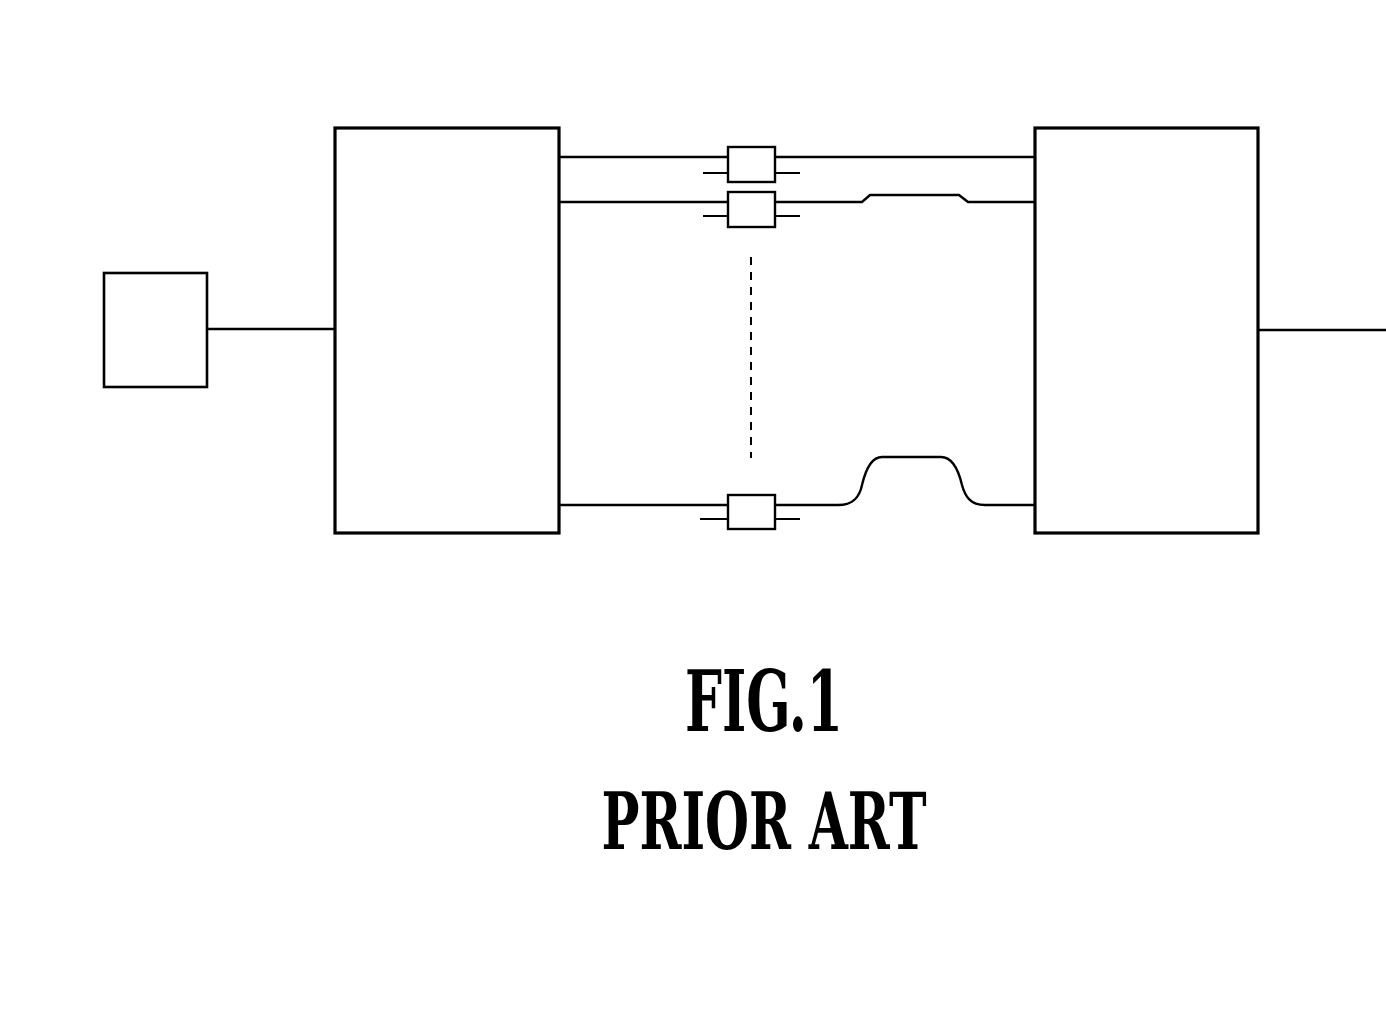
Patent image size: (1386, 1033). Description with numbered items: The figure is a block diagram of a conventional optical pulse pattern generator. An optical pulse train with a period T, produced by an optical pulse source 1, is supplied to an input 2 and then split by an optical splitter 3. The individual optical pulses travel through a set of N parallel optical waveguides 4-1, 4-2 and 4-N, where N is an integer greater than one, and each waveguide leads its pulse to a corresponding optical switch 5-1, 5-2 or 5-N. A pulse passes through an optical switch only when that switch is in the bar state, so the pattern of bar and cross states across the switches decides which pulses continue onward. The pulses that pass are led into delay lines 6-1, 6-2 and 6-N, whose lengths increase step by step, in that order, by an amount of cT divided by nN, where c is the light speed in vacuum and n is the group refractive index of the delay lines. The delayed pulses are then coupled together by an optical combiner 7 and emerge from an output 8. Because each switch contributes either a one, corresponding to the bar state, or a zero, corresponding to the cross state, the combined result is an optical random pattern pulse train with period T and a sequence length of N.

The optical pulse source 1 is at (155, 273).
The input 2 is at (272, 329).
The optical splitter 3 is at (451, 128).
The optical waveguide 4-1 is at (639, 157).
The optical waveguide 4-2 is at (637, 202).
The optical waveguide 4-N is at (640, 505).
The optical switch 5-1 is at (752, 147).
The optical switch 5-2 is at (768, 227).
The optical switch 5-N is at (750, 530).
The delay line 6-1 is at (916, 157).
The delay line 6-2 is at (914, 194).
The delay line 6-N is at (917, 457).
The optical combiner 7 is at (1152, 128).
The output 8 is at (1323, 330).